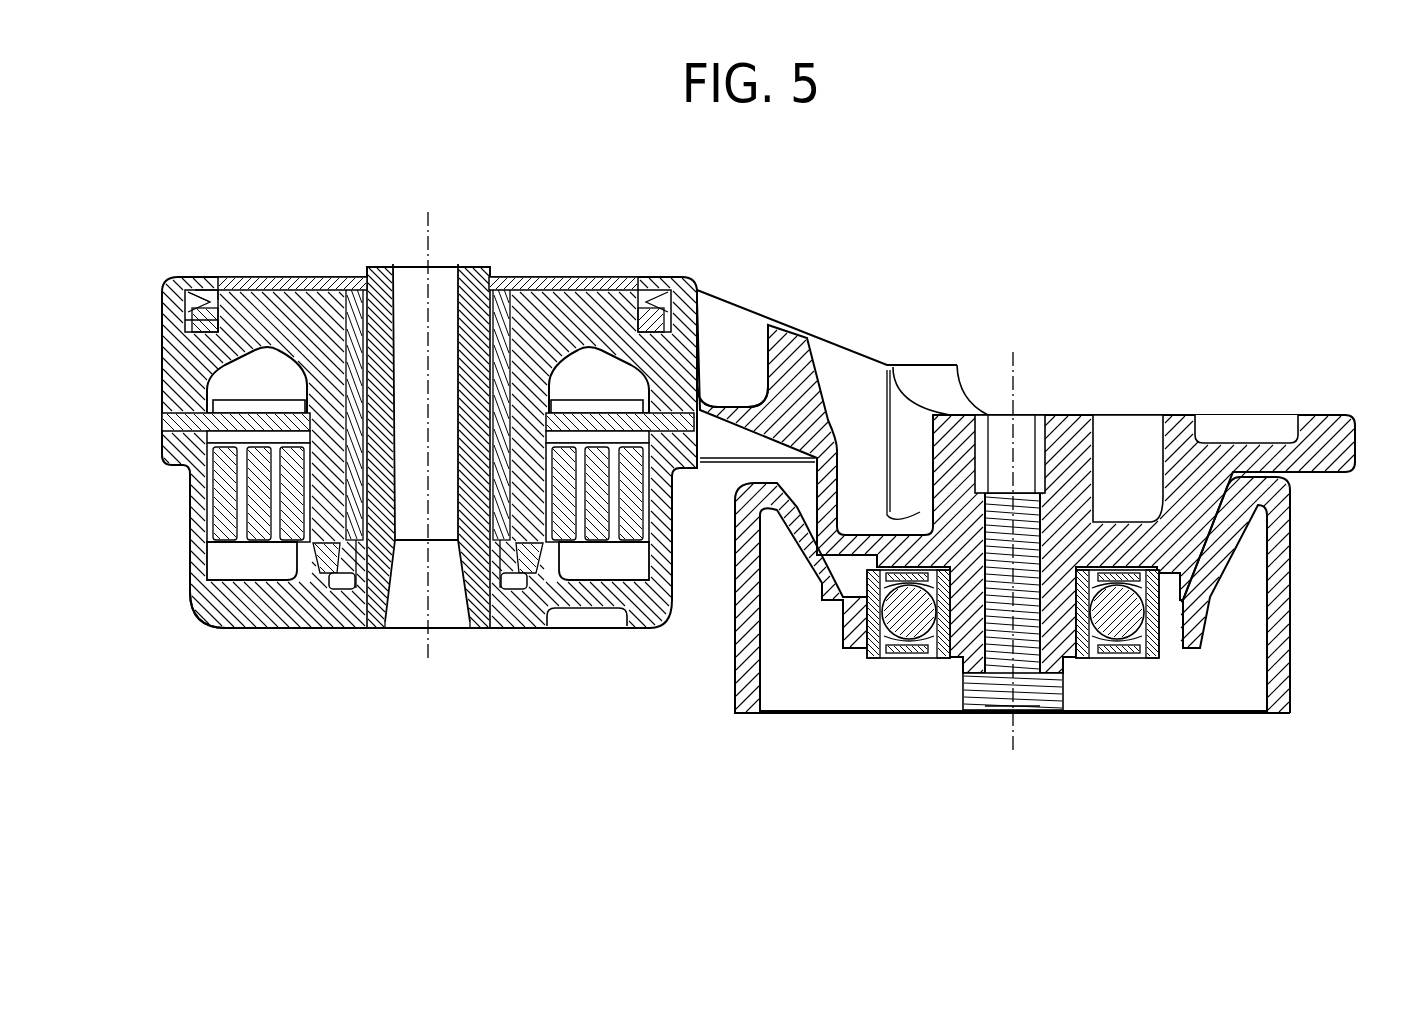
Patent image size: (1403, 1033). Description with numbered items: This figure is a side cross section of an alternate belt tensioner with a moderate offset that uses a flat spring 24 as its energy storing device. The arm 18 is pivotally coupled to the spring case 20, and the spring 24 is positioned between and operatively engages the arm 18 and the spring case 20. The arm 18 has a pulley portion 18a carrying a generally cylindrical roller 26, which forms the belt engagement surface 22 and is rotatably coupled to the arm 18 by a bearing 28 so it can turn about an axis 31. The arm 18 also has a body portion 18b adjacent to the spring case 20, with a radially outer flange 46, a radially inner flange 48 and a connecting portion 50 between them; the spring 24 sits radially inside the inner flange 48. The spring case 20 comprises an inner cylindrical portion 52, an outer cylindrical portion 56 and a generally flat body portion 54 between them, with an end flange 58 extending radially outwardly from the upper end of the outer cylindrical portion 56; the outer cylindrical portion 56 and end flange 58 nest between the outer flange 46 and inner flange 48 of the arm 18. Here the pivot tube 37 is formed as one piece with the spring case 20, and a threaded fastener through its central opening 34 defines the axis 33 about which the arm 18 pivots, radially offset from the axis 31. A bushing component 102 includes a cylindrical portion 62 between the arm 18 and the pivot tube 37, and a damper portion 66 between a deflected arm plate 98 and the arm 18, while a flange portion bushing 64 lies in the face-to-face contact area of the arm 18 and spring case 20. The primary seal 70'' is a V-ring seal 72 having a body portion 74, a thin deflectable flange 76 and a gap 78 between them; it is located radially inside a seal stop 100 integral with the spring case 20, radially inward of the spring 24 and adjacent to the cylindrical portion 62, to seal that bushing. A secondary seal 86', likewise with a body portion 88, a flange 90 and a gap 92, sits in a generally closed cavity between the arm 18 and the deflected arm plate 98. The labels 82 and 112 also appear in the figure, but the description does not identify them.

The arm 18 is at (1138, 752).
The pulley portion 18a is at (1243, 748).
The body portion 18b is at (700, 355).
The spring case 20 is at (523, 630).
The belt engagement surface 22 is at (1292, 592).
The flat spring 24 is at (226, 527).
The roller 26 is at (1292, 664).
The bearing 28 is at (1122, 632).
The axis 31 is at (1013, 733).
The axis 33 is at (428, 214).
The central opening 34 is at (447, 423).
The pivot tube 37 is at (398, 280).
The radially outer flange 46 is at (708, 380).
The radially inner flange 48 is at (533, 300).
The connecting portion 50 is at (598, 318).
The inner cylindrical portion 52 is at (470, 607).
The body portion 54 is at (611, 597).
The outer cylindrical portion 56 is at (663, 547).
The end flange 58 is at (683, 443).
The cylindrical portion 62 is at (456, 295).
The flange portion bushing 64 is at (658, 480).
The damper portion 66 is at (640, 282).
The seal 70'' is at (325, 624).
The V-ring seal 72 is at (247, 627).
The body portion 74 is at (208, 610).
The flange 76 is at (396, 628).
The gap 78 is at (323, 577).
The shoulder 82 is at (382, 571).
The secondary seal 86' is at (158, 332).
The body portion 88 is at (186, 318).
The flange 90 is at (212, 290).
The gap 92 is at (200, 300).
The deflected arm plate 98 is at (265, 278).
The seal stop 100 is at (277, 567).
The bushing component 102 is at (488, 265).
The coupling arrangement 112 is at (627, 232).